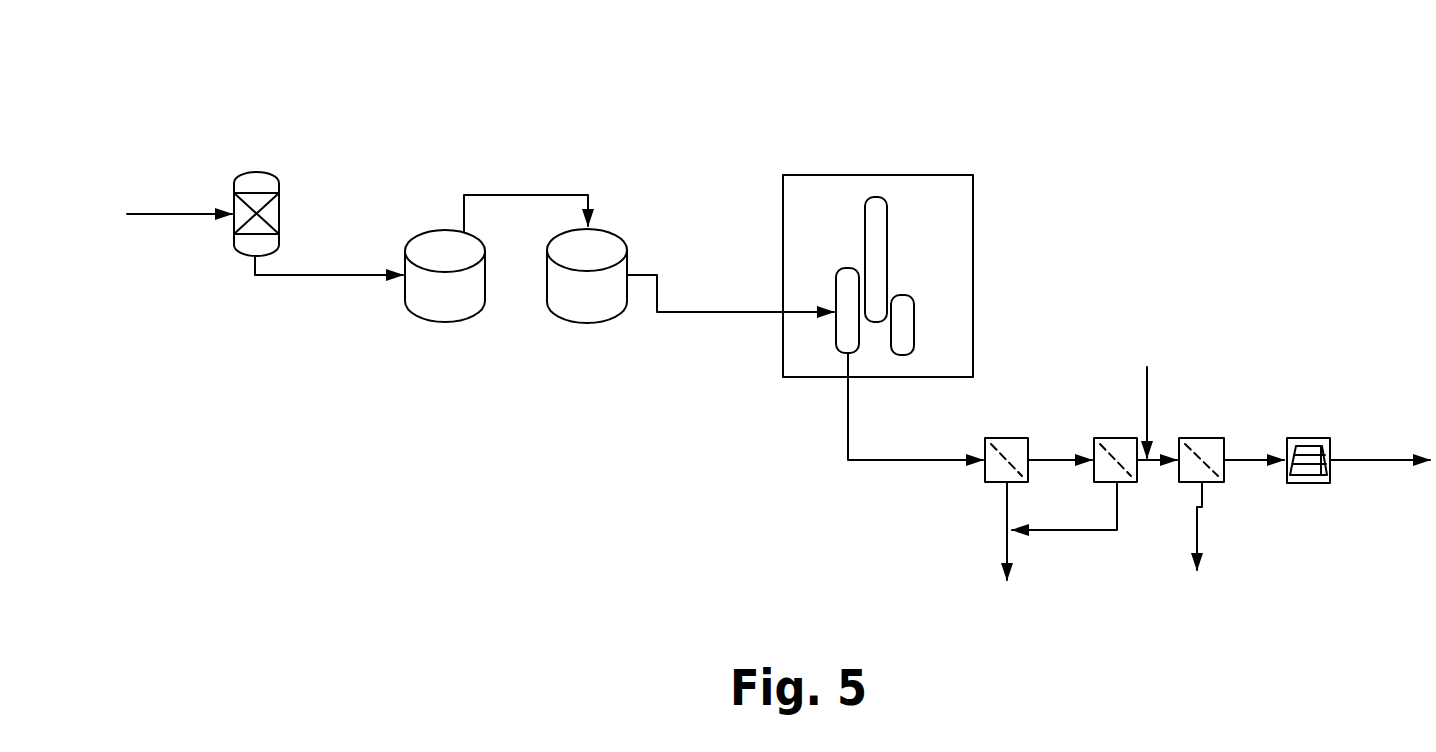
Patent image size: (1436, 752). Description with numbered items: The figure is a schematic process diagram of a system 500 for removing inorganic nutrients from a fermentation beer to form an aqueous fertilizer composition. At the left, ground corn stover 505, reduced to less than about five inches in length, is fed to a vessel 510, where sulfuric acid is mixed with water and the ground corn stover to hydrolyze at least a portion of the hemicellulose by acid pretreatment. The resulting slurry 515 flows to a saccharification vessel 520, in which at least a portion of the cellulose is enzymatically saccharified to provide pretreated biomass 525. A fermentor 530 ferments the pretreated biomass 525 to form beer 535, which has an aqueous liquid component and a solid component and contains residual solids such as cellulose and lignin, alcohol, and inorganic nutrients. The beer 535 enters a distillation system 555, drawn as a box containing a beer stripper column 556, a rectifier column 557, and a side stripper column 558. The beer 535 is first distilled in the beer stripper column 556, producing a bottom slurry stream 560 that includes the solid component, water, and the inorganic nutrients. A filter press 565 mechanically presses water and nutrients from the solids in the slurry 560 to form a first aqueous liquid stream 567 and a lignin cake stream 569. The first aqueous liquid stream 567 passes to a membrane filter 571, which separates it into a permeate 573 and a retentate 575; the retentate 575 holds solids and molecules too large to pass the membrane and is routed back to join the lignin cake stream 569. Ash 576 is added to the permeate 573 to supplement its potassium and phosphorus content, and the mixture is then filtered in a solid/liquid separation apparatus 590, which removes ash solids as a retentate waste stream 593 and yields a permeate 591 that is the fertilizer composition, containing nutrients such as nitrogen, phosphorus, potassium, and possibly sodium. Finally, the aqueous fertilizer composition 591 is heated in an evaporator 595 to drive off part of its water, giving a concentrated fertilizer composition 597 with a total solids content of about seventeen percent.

The system 500 is at (720, 82).
The ground corn stover 505 is at (150, 215).
The vessel 510 is at (272, 178).
The slurry 515 is at (355, 276).
The saccharification vessel 520 is at (450, 321).
The pretreated biomass 525 is at (528, 195).
The fermentor 530 is at (621, 241).
The beer 535 is at (715, 313).
The distillation system 555 is at (915, 276).
The beer stripper column 556 is at (842, 268).
The rectifier column 557 is at (888, 222).
The side stripper column 558 is at (909, 296).
The bottom slurry stream 560 is at (890, 462).
The filter press 565 is at (985, 442).
The first aqueous liquid stream 567 is at (1050, 462).
The lignin cake stream 569 is at (1007, 506).
The membrane filter 571 is at (1100, 438).
The permeate 573 is at (1152, 462).
The retentate 575 is at (1078, 532).
The ash 576 is at (1147, 380).
The solid/liquid separation apparatus 590 is at (1224, 445).
The permeate 591 is at (1243, 462).
The retentate waste stream 593 is at (1197, 530).
The evaporator 595 is at (1318, 440).
The concentrated fertilizer composition 597 is at (1355, 462).